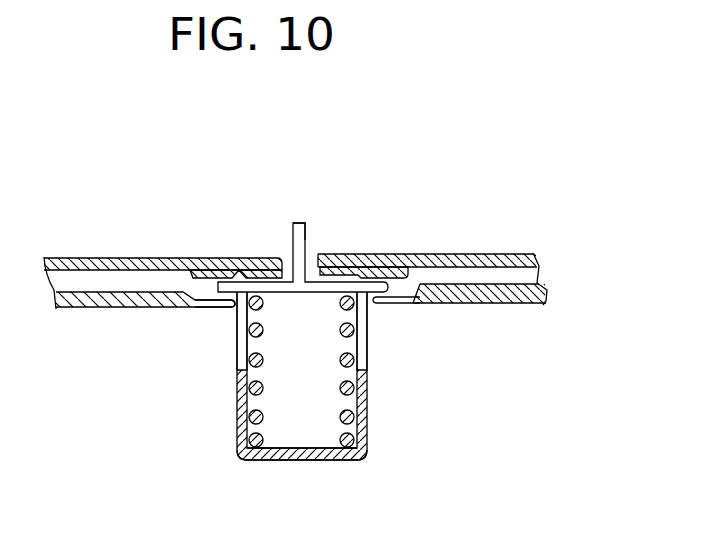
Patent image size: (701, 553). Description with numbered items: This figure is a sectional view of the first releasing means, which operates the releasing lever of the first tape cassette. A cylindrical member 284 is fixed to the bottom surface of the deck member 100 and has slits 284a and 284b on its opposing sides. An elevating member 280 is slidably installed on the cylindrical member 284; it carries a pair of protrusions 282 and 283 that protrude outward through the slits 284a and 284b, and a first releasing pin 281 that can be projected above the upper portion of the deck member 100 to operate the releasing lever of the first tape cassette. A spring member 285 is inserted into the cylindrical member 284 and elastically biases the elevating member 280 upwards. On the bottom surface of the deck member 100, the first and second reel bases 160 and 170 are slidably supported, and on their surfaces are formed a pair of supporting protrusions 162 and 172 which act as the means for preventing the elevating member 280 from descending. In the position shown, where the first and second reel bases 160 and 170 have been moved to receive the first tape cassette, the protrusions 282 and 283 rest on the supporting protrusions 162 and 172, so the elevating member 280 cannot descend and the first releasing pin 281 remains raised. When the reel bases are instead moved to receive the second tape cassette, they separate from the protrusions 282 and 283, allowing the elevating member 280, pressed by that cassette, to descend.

The deck member 100 is at (138, 257).
The first reel base 160 is at (73, 309).
The supporting protrusion 162 is at (226, 307).
The second reel base 170 is at (543, 305).
The supporting protrusion 172 is at (400, 312).
The elevating member 280 is at (312, 229).
The first releasing pin 281 is at (293, 223).
The protrusion 282 is at (217, 278).
The protrusion 283 is at (397, 273).
The cylindrical member 284 is at (309, 389).
The slit 284a is at (235, 348).
The slit 284b is at (368, 343).
The spring member 285 is at (237, 442).